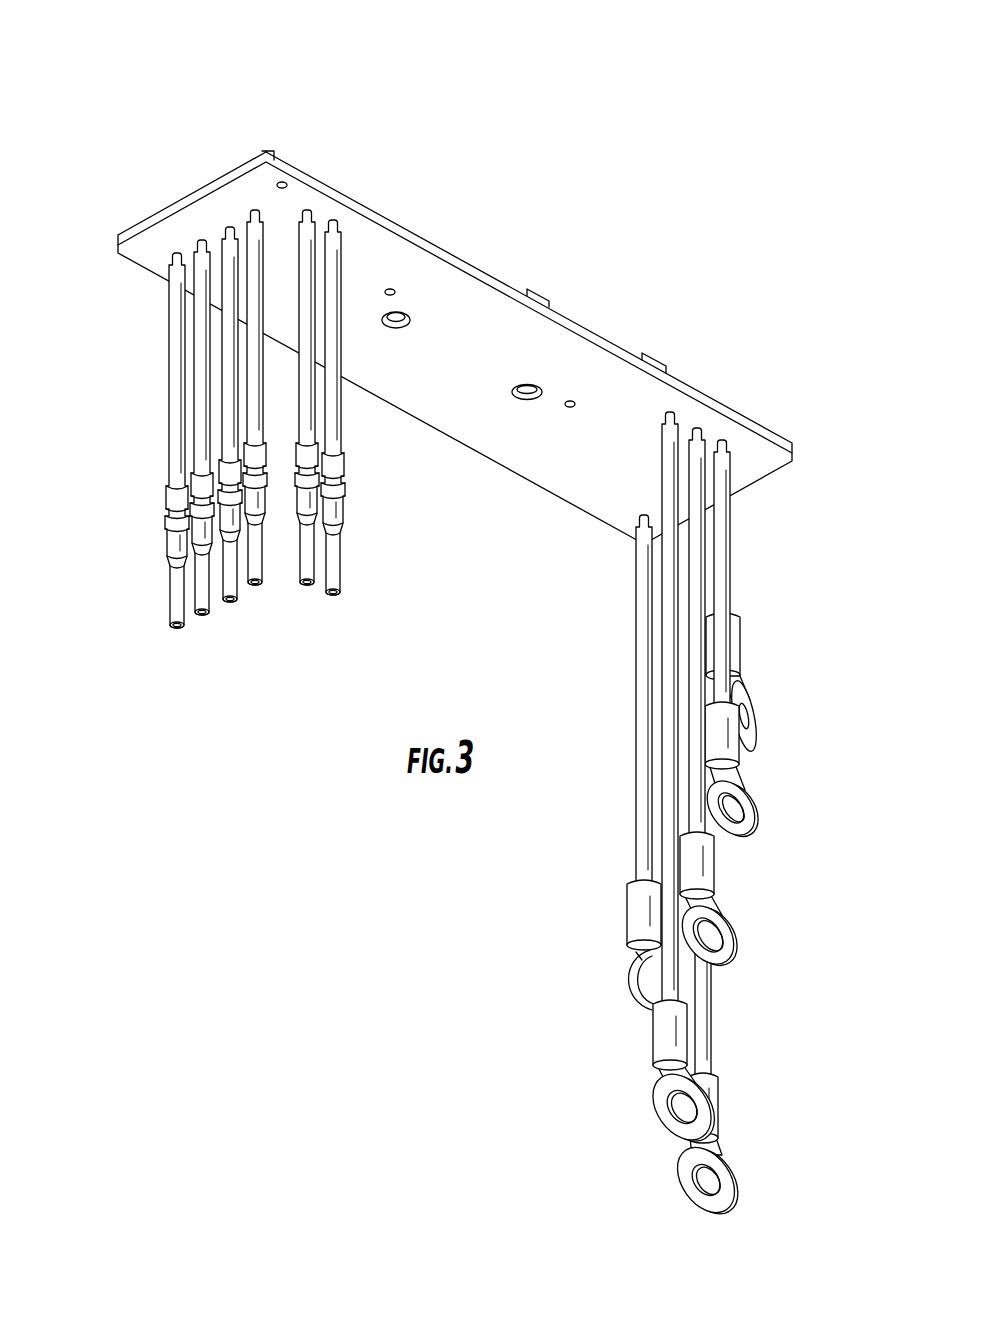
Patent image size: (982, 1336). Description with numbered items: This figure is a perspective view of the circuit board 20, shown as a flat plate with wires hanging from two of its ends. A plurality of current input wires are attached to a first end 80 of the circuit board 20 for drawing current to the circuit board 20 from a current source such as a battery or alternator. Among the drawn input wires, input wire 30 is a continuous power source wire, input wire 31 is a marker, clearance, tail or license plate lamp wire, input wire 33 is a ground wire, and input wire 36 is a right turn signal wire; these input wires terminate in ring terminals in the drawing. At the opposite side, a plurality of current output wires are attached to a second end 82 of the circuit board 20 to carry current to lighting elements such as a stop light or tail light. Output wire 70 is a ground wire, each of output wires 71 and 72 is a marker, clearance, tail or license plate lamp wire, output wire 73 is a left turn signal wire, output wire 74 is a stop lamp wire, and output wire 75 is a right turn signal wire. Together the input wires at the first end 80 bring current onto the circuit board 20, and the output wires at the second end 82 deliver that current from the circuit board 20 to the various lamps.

The circuit board 20 is at (445, 639).
The input wire 30 is at (672, 408).
The input wire 31 is at (694, 426).
The input wire 33 is at (722, 463).
The input wire 36 is at (640, 538).
The output wire 70 is at (307, 210).
The output wire 71 is at (333, 247).
The output wire 72 is at (253, 207).
The output wire 73 is at (227, 223).
The output wire 74 is at (197, 242).
The output wire 75 is at (172, 257).
The first end 80 is at (760, 482).
The second end 82 is at (183, 198).